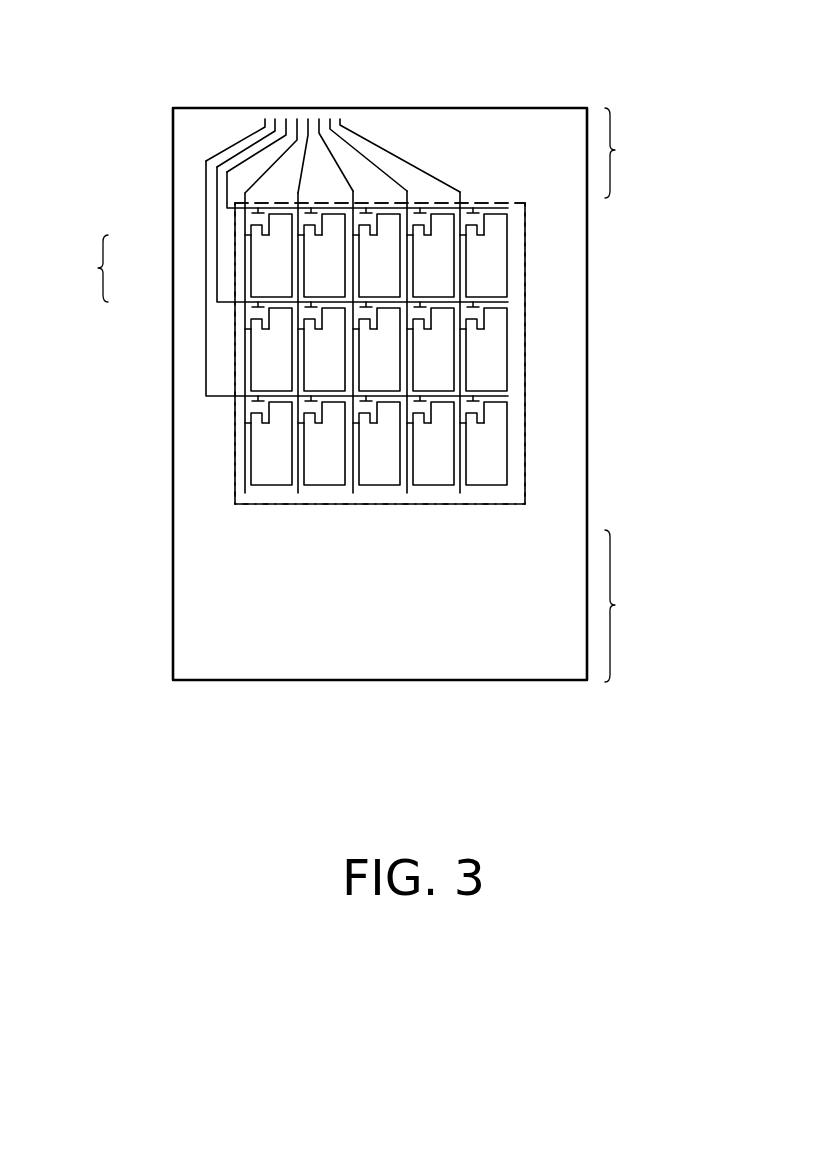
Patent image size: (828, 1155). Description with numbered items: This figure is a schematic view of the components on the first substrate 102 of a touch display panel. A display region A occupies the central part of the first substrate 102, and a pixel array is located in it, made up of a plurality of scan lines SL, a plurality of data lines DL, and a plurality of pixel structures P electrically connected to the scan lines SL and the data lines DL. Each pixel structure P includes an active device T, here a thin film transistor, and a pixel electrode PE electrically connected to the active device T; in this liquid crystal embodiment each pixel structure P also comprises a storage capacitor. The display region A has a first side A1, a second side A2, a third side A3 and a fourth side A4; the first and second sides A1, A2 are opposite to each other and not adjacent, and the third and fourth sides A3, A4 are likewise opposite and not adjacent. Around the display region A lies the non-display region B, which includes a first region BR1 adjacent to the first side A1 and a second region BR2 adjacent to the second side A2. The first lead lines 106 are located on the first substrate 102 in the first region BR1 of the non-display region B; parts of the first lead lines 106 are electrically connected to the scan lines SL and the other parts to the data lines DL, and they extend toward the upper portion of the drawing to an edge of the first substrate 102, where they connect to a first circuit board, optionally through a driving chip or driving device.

The first substrate 102 is at (173, 610).
The first lead lines 106 is at (229, 170).
The scan lines SL is at (235, 214).
The data lines DL is at (299, 262).
The active device T is at (252, 228).
The pixel electrode PE is at (244, 291).
The pixel structure P is at (94, 268).
The display region A is at (527, 370).
The first side A1 is at (484, 197).
The second side A2 is at (342, 508).
The third side A3 is at (530, 295).
The fourth side A4 is at (231, 458).
The non-display region B is at (550, 443).
The first region BR1 is at (632, 153).
The second region BR2 is at (634, 606).